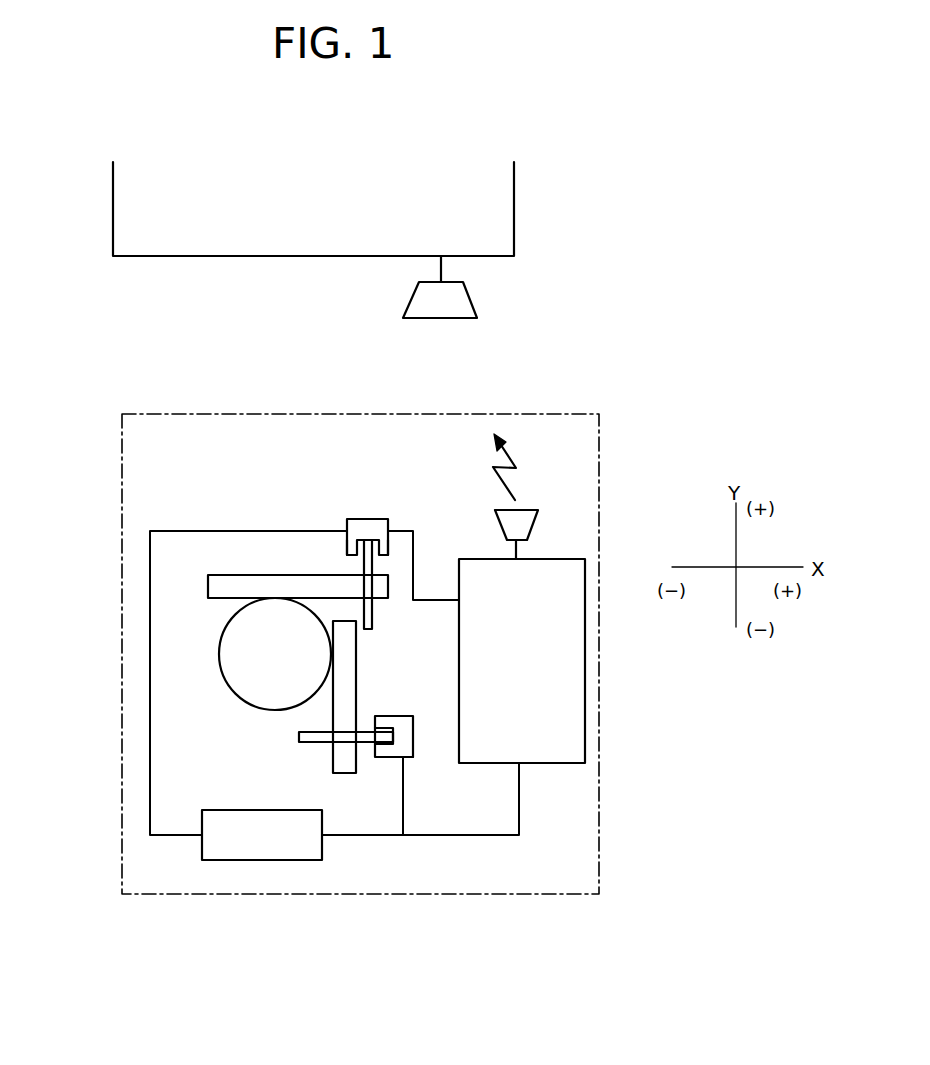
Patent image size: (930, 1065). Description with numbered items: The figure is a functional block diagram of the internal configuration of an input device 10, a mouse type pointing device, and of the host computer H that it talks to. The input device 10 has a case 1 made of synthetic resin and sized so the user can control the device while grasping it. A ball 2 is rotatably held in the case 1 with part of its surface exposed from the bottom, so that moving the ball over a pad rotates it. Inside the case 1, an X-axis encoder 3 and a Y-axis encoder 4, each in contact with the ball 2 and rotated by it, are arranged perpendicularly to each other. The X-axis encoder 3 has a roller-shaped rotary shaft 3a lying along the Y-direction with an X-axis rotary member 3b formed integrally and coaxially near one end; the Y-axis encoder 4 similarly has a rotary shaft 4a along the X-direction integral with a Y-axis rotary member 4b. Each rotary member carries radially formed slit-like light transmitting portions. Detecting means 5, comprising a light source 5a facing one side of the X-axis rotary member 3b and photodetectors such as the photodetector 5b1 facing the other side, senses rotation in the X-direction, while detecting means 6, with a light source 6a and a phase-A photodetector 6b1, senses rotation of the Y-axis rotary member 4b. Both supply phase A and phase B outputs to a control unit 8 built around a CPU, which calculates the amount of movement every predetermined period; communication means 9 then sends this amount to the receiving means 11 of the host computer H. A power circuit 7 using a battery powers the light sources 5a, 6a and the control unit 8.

The host computer H is at (140, 224).
The receiving means 11 is at (460, 299).
The input device 10 is at (588, 408).
The case 1 is at (122, 830).
The ball 2 is at (228, 665).
The X-axis encoder 3 is at (340, 698).
The rotary shaft 3a is at (342, 686).
The X-axis rotary member 3b is at (299, 737).
The Y-axis encoder 4 is at (259, 552).
The rotary shaft 4a is at (208, 590).
The Y-axis rotary member 4b is at (373, 612).
The detecting means 5 is at (420, 747).
The light source 5a is at (392, 757).
The photodetector 5b1 is at (385, 716).
The detecting means 6 is at (365, 514).
The light source 6a is at (383, 548).
The phase-A photodetector 6b1 is at (347, 548).
The power circuit 7 is at (202, 855).
The control unit 8 is at (548, 763).
The communication means 9 is at (527, 510).